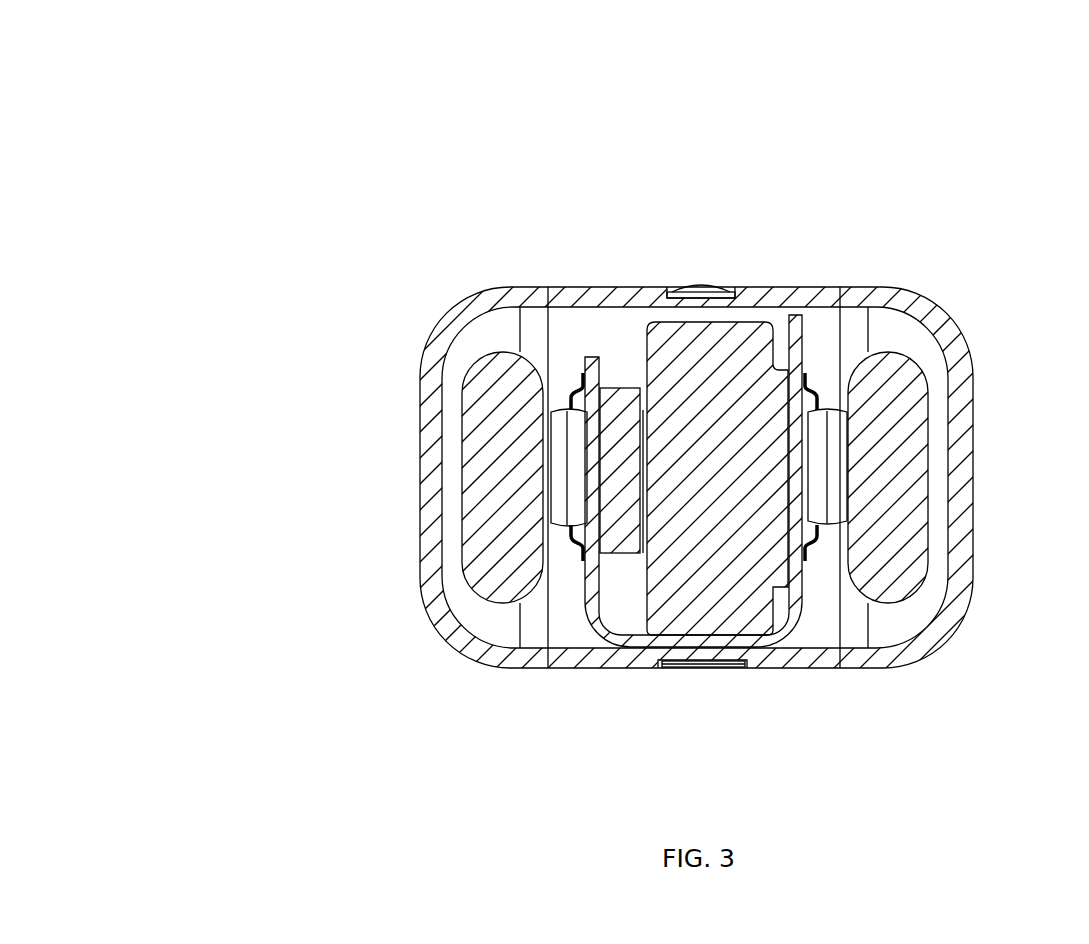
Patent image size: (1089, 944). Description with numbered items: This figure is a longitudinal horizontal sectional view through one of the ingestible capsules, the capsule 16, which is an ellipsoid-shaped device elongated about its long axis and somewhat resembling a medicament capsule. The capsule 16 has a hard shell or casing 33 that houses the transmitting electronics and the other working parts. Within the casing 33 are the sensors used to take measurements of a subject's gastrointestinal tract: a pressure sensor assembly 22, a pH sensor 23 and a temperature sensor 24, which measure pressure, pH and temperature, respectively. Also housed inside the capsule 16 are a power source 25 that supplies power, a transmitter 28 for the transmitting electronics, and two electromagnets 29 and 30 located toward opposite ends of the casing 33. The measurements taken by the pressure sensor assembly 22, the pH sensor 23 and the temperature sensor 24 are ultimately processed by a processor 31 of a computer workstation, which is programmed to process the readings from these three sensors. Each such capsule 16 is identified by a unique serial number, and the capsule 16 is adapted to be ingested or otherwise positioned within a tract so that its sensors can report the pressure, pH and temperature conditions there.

The capsule 16 is at (922, 177).
The pressure sensor assembly 22 is at (708, 252).
The pH sensor 23 is at (677, 698).
The temperature sensor 24 is at (833, 512).
The power source 25 is at (749, 329).
The transmitter 28 is at (536, 409).
The electromagnet 29 is at (467, 468).
The electromagnet 30 is at (935, 486).
The processor 31 is at (610, 411).
The casing 33 is at (893, 673).